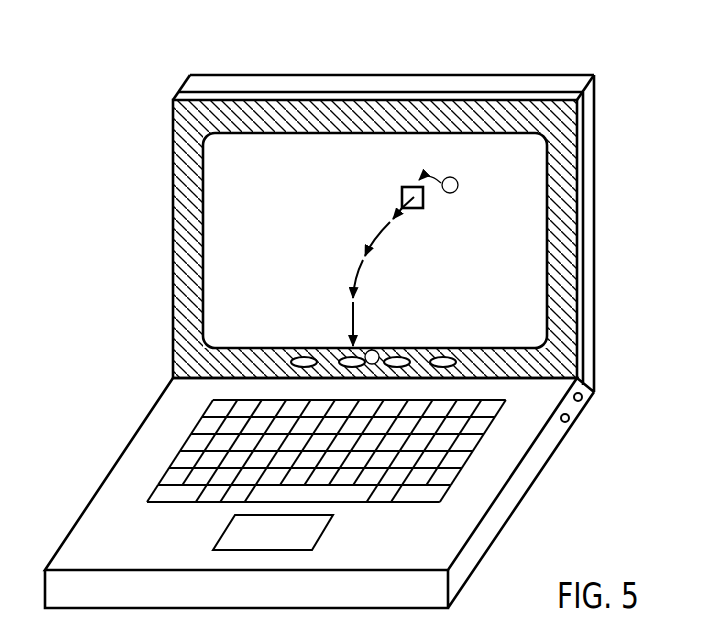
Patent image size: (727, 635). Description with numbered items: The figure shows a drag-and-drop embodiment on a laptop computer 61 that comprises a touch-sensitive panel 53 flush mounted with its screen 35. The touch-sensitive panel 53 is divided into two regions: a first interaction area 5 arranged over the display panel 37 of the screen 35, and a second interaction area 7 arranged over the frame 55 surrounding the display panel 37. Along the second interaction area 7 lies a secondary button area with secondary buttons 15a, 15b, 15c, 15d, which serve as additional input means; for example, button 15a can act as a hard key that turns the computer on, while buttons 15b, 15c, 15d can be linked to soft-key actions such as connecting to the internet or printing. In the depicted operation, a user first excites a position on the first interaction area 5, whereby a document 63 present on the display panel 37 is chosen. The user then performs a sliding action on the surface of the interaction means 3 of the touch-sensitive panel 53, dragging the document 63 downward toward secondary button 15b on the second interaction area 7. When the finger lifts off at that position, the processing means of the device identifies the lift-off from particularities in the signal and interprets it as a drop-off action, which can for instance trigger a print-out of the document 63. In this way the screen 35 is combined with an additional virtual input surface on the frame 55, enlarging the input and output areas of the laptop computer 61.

The interaction means 3 is at (374, 229).
The first interaction area 5 is at (528, 202).
The second interaction area 7 is at (565, 248).
The secondary button 15a is at (293, 353).
The secondary button 15b is at (339, 353).
The secondary button 15c is at (383, 350).
The secondary button 15d is at (429, 350).
The screen 35 is at (288, 70).
The display panel 37 is at (405, 157).
The touch-sensitive panel 53 is at (488, 98).
The frame 55 is at (193, 80).
The laptop computer 61 is at (135, 169).
The document 63 is at (401, 192).